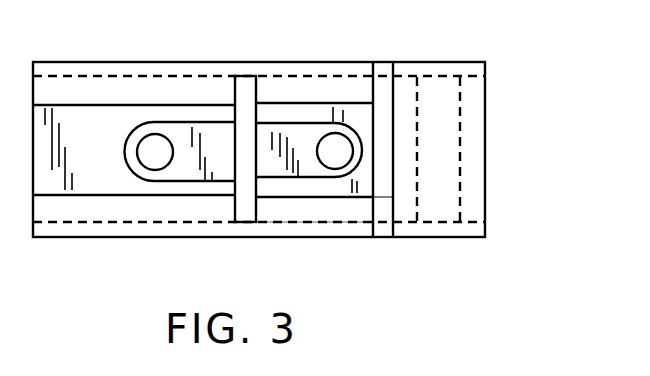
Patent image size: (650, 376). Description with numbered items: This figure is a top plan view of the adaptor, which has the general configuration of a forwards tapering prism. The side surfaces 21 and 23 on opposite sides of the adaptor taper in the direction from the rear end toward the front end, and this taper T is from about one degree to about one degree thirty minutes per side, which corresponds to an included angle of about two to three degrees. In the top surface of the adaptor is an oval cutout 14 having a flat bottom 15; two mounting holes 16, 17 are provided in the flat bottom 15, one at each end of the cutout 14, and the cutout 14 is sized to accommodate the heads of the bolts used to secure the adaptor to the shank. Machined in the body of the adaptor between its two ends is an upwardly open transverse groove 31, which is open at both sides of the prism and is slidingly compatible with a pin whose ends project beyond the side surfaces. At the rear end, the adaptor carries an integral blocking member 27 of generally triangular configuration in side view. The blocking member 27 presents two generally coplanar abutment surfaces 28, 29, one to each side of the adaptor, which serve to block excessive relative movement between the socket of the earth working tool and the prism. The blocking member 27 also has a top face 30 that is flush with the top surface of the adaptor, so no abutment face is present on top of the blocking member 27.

The side surface 21 is at (86, 97).
The taper T is at (100, 80).
The mounting hole 17 is at (152, 142).
The transverse passage or groove 31 is at (245, 90).
The flat bottom 15 is at (276, 148).
The oval cutout 14 is at (302, 133).
The mounting hole 16 is at (333, 143).
The abutment surface 28 is at (373, 93).
The top face 30 is at (388, 183).
The abutment surface 29 is at (373, 208).
The side surface 23 is at (312, 210).
The blocking member 27 is at (450, 137).